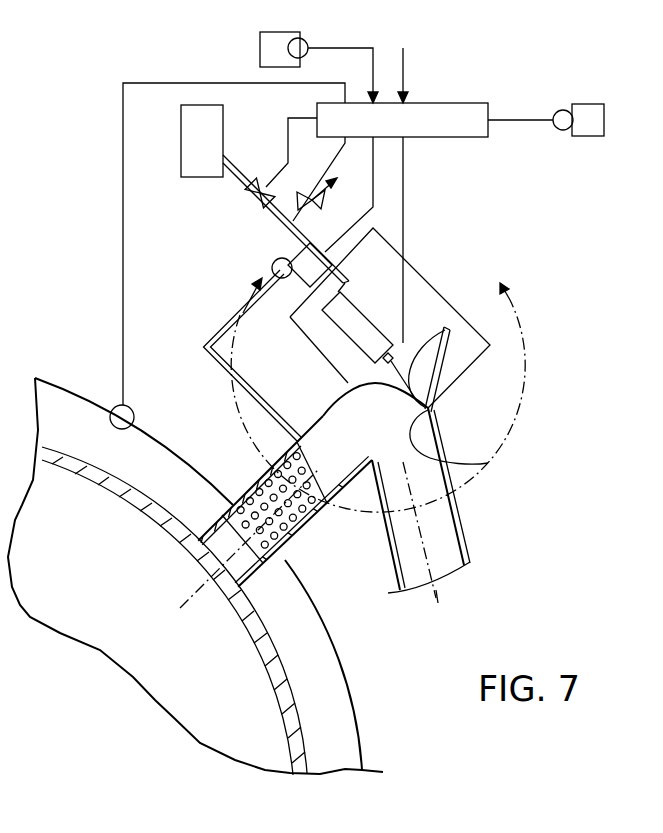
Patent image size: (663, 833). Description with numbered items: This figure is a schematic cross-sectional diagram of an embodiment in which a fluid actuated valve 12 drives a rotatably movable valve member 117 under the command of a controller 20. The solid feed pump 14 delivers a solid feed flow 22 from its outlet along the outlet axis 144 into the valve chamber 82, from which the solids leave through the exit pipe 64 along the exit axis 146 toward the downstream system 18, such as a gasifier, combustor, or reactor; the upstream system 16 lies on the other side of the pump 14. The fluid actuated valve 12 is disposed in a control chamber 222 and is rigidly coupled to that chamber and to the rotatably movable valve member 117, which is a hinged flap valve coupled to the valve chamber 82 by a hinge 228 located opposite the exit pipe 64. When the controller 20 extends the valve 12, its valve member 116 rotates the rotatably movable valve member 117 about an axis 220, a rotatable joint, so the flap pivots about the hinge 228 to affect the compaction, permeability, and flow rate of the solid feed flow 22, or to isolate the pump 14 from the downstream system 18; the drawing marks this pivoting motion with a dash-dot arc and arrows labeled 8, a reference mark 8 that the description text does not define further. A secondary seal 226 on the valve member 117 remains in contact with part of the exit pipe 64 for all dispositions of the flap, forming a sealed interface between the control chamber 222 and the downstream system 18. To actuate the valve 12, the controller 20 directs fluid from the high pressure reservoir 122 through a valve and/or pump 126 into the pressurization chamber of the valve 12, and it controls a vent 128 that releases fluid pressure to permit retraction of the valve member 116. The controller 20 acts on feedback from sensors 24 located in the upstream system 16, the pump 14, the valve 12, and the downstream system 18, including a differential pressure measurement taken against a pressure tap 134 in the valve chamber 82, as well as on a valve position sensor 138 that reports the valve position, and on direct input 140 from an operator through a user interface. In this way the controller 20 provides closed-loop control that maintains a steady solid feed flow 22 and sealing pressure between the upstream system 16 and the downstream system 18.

The rotation angle / direction arrows 8 is at (378, 393).
The fluid actuated valve 12 is at (365, 320).
The solid feed pump 14 is at (84, 569).
The upstream system 16 is at (287, 60).
The downstream system 18 is at (599, 132).
The controller 20 is at (481, 132).
The solid feed flow 22 is at (290, 548).
The sensor 24 is at (305, 40).
The exit pipe 64 is at (467, 549).
The valve chamber 82 is at (391, 444).
The valve member 116 is at (442, 328).
The rotatably movable valve member 117 is at (488, 463).
The high pressure reservoir 122 is at (221, 152).
The valve and/or pump 126 is at (258, 200).
The vent 128 is at (312, 212).
The pressure tap 134 is at (298, 432).
The valve position sensor 138 is at (383, 361).
The direct input 140 is at (403, 65).
The outlet axis 144 is at (204, 586).
The exit axis 146 is at (440, 594).
The axis 220 is at (333, 420).
The control chamber 222 is at (440, 290).
The secondary seal 226 is at (437, 366).
The hinge 228 is at (308, 478).